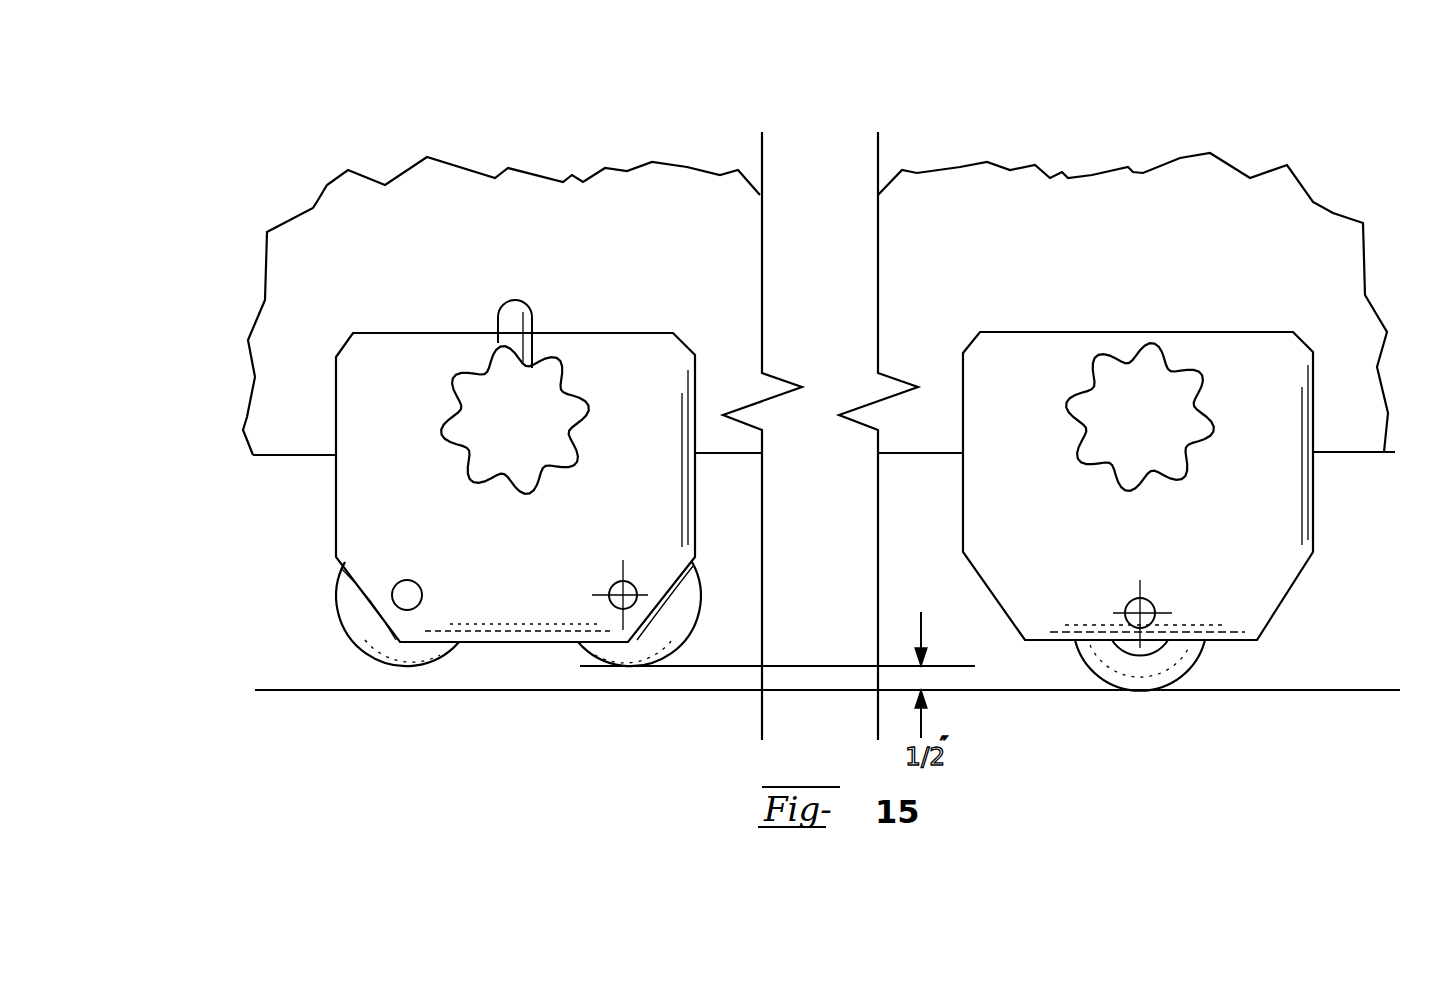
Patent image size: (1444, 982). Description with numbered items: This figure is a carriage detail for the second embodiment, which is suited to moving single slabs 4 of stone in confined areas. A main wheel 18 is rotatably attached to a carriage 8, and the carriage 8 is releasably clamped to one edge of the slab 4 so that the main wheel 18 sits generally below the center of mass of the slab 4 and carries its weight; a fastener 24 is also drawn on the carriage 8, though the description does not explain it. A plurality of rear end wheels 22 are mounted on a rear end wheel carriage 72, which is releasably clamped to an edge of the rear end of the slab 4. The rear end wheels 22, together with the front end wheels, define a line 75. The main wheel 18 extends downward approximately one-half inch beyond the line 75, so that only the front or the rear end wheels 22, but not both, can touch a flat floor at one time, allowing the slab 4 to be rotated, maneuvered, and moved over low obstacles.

The slab 4 is at (318, 200).
The carriage 8 is at (1257, 640).
The main wheel 18 is at (1145, 690).
The rear end wheels 22 is at (443, 658).
The adjustment screw 24 is at (1138, 620).
The rear end wheel carriage 72 is at (336, 542).
The line 75 is at (722, 667).